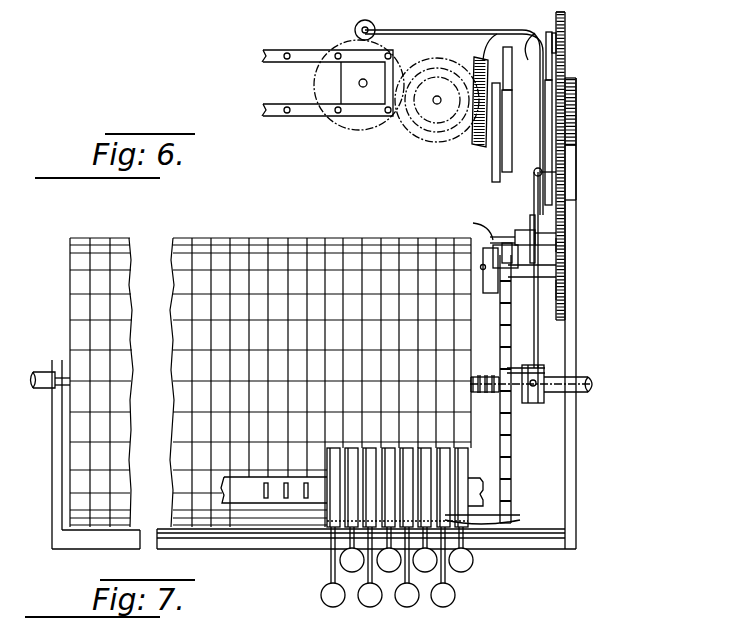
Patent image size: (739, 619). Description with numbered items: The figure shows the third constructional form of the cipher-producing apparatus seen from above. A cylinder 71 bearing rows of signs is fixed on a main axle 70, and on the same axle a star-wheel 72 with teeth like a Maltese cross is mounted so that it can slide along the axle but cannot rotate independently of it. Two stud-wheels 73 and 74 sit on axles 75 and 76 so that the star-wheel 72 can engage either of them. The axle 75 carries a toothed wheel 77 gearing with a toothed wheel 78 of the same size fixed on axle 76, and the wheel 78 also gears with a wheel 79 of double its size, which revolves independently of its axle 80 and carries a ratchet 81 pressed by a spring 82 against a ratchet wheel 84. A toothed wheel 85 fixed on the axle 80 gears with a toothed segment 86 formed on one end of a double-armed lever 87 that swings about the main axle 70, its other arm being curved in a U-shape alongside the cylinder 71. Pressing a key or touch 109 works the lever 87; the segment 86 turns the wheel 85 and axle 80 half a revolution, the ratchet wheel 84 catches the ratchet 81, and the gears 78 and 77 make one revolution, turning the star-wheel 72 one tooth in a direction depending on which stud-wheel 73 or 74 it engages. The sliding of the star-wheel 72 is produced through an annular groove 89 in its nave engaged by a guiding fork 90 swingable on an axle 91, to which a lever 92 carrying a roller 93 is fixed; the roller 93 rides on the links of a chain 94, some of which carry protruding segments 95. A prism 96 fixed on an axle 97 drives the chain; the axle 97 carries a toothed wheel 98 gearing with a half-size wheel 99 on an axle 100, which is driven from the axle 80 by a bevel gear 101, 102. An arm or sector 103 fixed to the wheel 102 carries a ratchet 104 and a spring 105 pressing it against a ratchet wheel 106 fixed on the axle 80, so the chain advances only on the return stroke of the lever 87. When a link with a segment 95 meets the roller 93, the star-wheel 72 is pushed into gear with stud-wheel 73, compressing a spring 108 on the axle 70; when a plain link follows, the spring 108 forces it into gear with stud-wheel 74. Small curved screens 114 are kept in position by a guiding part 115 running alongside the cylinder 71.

The main axle 70 is at (585, 376).
The cylinder 71 is at (298, 238).
The star-wheel 72 is at (512, 446).
The stud-wheel 73 is at (483, 251).
The stud-wheel 74 is at (522, 233).
The axle 75 is at (550, 283).
The axle 76 is at (550, 245).
The toothed wheel 77 is at (558, 270).
The toothed wheel 78 is at (566, 190).
The wheel 79 is at (566, 16).
The axle 80 is at (545, 112).
The ratchet 81 is at (549, 32).
The spring 82 is at (557, 40).
The ratchet wheel 84 is at (577, 108).
The toothed wheel 85 is at (577, 80).
The toothed segment 86 is at (575, 140).
The double-armed lever 87 is at (505, 540).
The annular groove 89 is at (536, 403).
The guiding fork 90 is at (539, 333).
The axle 91 is at (518, 185).
The lever 92 is at (487, 54).
The roller 93 is at (372, 23).
The chain 94 is at (272, 116).
The protruding segment 95 is at (353, 50).
The prism 96 is at (352, 128).
The axle 97 is at (359, 83).
The toothed wheel 98 is at (327, 117).
The toothed wheel 99 is at (412, 116).
The axle 100 is at (434, 106).
The bevel gear 101 is at (430, 58).
The bevel gear wheel 102 is at (490, 48).
The arm or sector 103 is at (494, 170).
The ratchet 104 is at (494, 148).
The spring 105 is at (516, 162).
The ratchet wheel 106 is at (512, 50).
The spring 108 is at (477, 375).
The keys or touches 109 is at (340, 560).
The screen 114 is at (512, 511).
The guiding part 115 is at (483, 482).